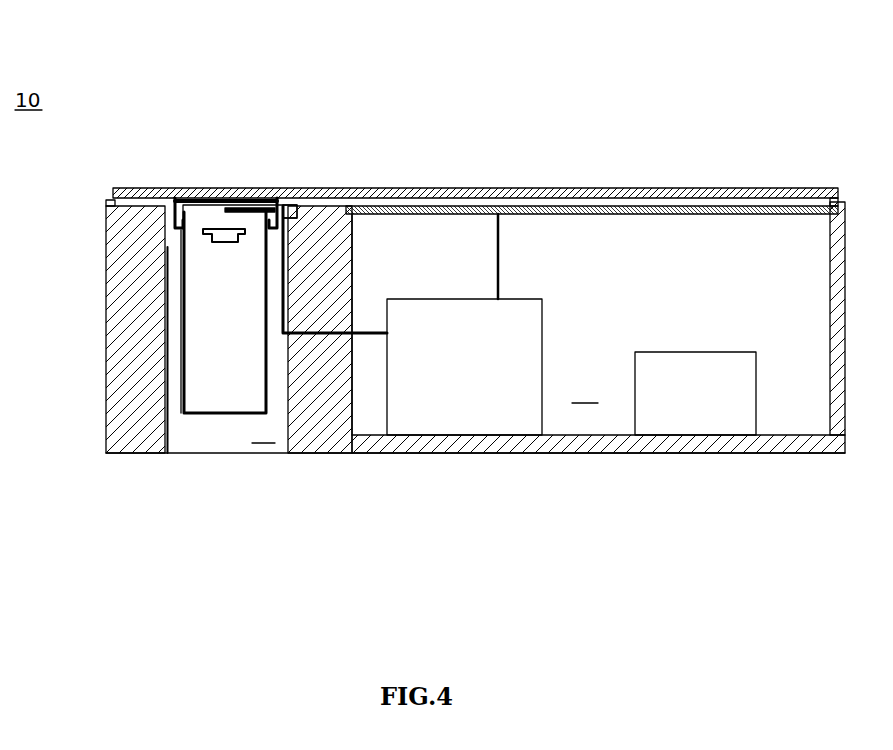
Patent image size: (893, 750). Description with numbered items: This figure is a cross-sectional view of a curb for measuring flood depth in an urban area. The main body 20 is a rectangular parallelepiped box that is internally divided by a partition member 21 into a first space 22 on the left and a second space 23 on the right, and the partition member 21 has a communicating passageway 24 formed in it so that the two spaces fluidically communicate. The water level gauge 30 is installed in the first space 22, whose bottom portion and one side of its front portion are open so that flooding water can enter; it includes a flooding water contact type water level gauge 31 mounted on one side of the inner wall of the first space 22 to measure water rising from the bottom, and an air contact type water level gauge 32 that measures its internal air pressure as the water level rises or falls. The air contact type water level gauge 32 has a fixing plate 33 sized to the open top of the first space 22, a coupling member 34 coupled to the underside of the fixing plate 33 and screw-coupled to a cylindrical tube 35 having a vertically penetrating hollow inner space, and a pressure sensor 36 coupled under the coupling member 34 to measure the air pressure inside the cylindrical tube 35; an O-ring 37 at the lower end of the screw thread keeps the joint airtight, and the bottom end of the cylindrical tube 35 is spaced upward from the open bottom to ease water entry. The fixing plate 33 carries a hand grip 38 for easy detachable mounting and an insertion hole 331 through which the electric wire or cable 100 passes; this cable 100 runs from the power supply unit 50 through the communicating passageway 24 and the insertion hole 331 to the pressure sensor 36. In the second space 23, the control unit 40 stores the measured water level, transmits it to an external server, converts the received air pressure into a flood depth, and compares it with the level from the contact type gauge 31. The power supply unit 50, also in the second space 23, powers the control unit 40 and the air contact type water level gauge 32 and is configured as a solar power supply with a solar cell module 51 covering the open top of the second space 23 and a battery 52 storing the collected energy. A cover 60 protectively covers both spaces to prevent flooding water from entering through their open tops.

The main body 20 is at (428, 362).
The partition member 21 is at (333, 427).
The first space 22 is at (226, 329).
The second space 23 is at (591, 324).
The communicating passageway 24 is at (335, 328).
The water level gauge 30 is at (158, 387).
The flooding water contact type water level gauge 31 is at (172, 432).
The air contact type water level gauge 32 is at (226, 420).
The fixing plate 33 is at (198, 222).
The insertion hole 331 is at (245, 208).
The coupling member 34 is at (158, 214).
The cylindrical tube 35 is at (185, 330).
The pressure sensor 36 is at (210, 233).
The O-ring 37 is at (305, 214).
The hand grip 38 is at (272, 206).
The control unit 40 is at (720, 368).
The power supply unit 50 is at (592, 234).
The solar cell module 51 is at (634, 206).
The battery 52 is at (510, 318).
The cover 60 is at (452, 188).
The electric wire or cable 100 is at (234, 225).